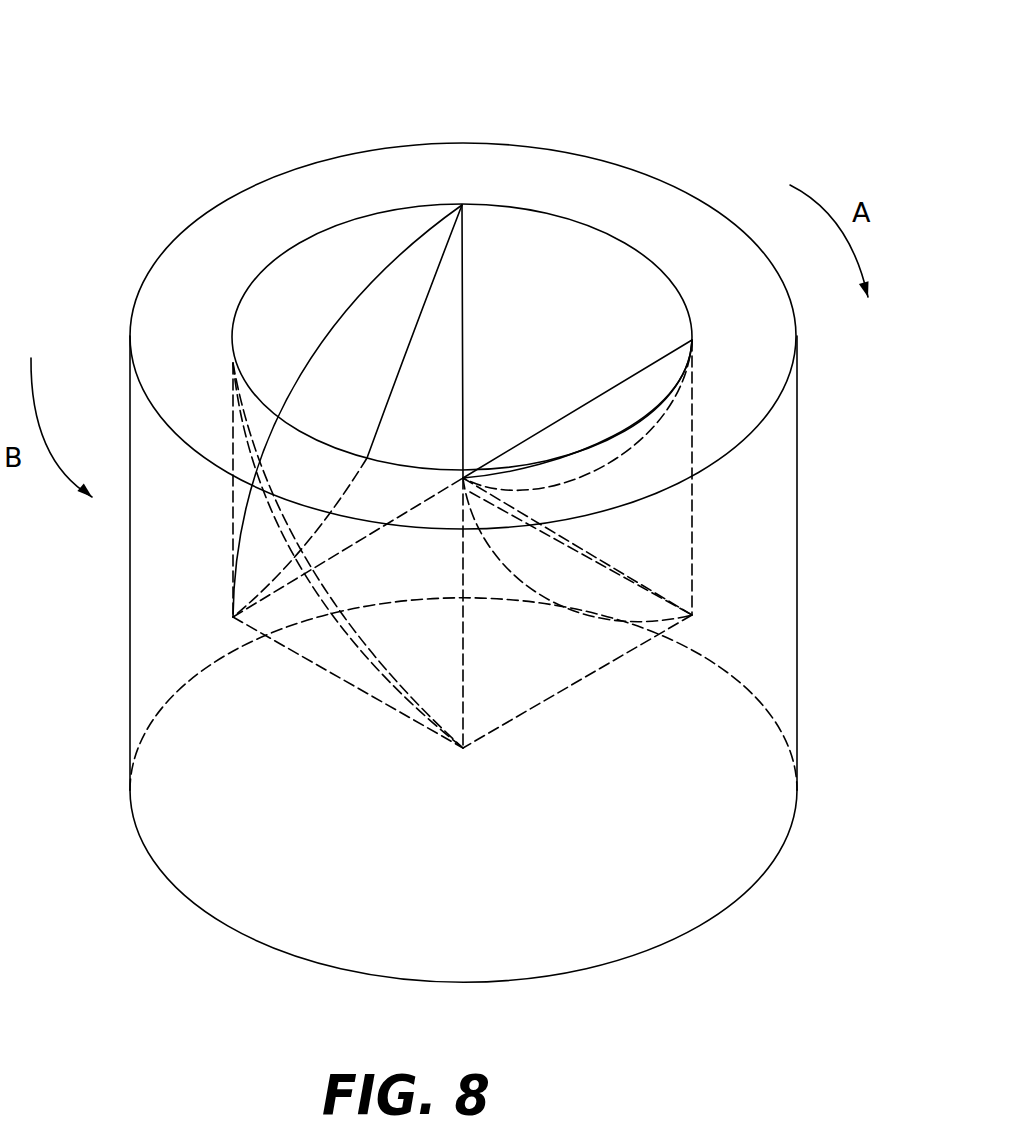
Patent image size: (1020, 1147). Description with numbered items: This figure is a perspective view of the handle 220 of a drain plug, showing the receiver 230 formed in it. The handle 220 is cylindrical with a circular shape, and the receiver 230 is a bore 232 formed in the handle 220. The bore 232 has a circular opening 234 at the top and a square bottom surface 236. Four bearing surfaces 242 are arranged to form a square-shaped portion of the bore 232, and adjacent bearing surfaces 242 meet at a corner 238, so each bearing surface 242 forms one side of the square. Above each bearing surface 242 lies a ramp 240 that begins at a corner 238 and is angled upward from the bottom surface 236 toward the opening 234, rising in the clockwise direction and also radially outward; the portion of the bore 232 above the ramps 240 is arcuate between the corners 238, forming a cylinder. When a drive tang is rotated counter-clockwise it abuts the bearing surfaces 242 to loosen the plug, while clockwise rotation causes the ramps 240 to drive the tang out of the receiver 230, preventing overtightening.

The handle 220 is at (765, 622).
The receiver 230 is at (445, 375).
The bore 232 is at (605, 322).
The circular opening 234 is at (320, 232).
The square bottom surface 236 is at (526, 676).
The corner 238 is at (470, 375).
The ramp 240 is at (380, 370).
The bearing surface 242 is at (439, 452).